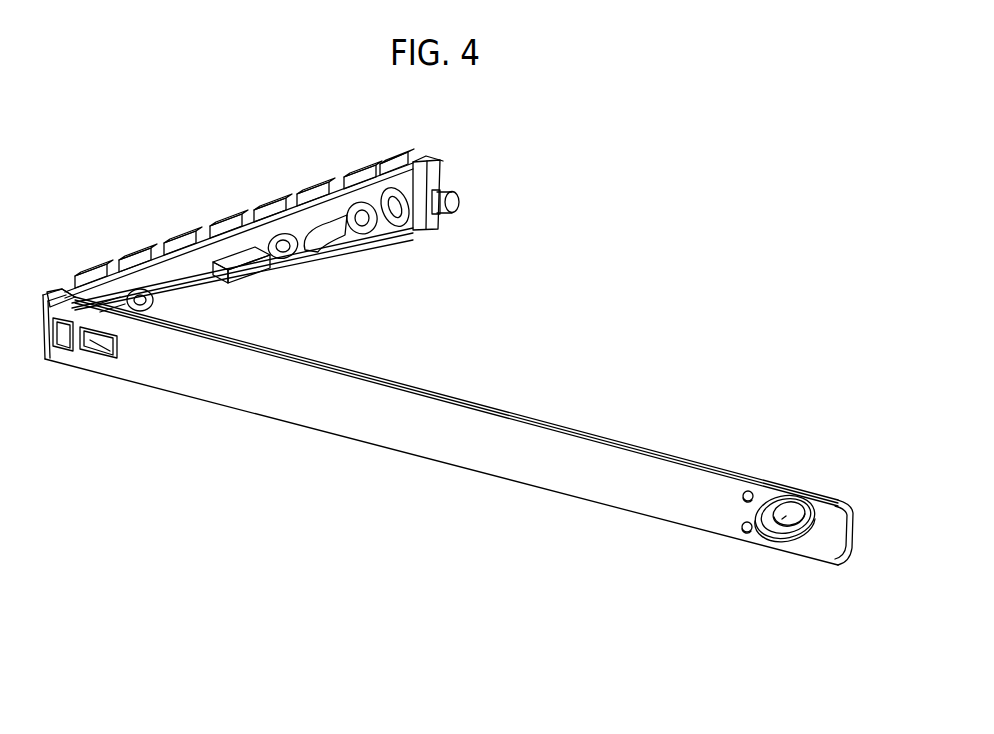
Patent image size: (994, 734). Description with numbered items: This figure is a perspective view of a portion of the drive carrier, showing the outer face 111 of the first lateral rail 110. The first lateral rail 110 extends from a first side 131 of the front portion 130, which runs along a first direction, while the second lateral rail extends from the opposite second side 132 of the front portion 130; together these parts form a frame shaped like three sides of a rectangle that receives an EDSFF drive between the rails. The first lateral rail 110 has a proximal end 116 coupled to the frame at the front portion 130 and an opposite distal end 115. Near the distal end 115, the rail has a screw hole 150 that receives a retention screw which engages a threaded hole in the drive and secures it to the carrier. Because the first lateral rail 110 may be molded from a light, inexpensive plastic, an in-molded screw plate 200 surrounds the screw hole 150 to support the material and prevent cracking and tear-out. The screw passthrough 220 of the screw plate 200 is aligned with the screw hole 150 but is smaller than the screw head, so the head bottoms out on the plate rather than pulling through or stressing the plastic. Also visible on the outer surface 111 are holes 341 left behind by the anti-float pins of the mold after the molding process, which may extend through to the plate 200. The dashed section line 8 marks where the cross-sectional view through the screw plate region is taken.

The first lateral rail 110 is at (500, 410).
The outer face 111 is at (388, 427).
The distal end 115 is at (862, 580).
The proximal end 116 is at (54, 404).
The front portion 130 is at (308, 264).
The first side 131 is at (67, 250).
The second side 132 is at (486, 177).
The screw hole 150 is at (762, 492).
The screw plate 200 is at (780, 538).
The screw passthrough 220 is at (797, 524).
The holes 341 is at (728, 513).
The section line 8- 8 is at (830, 491).